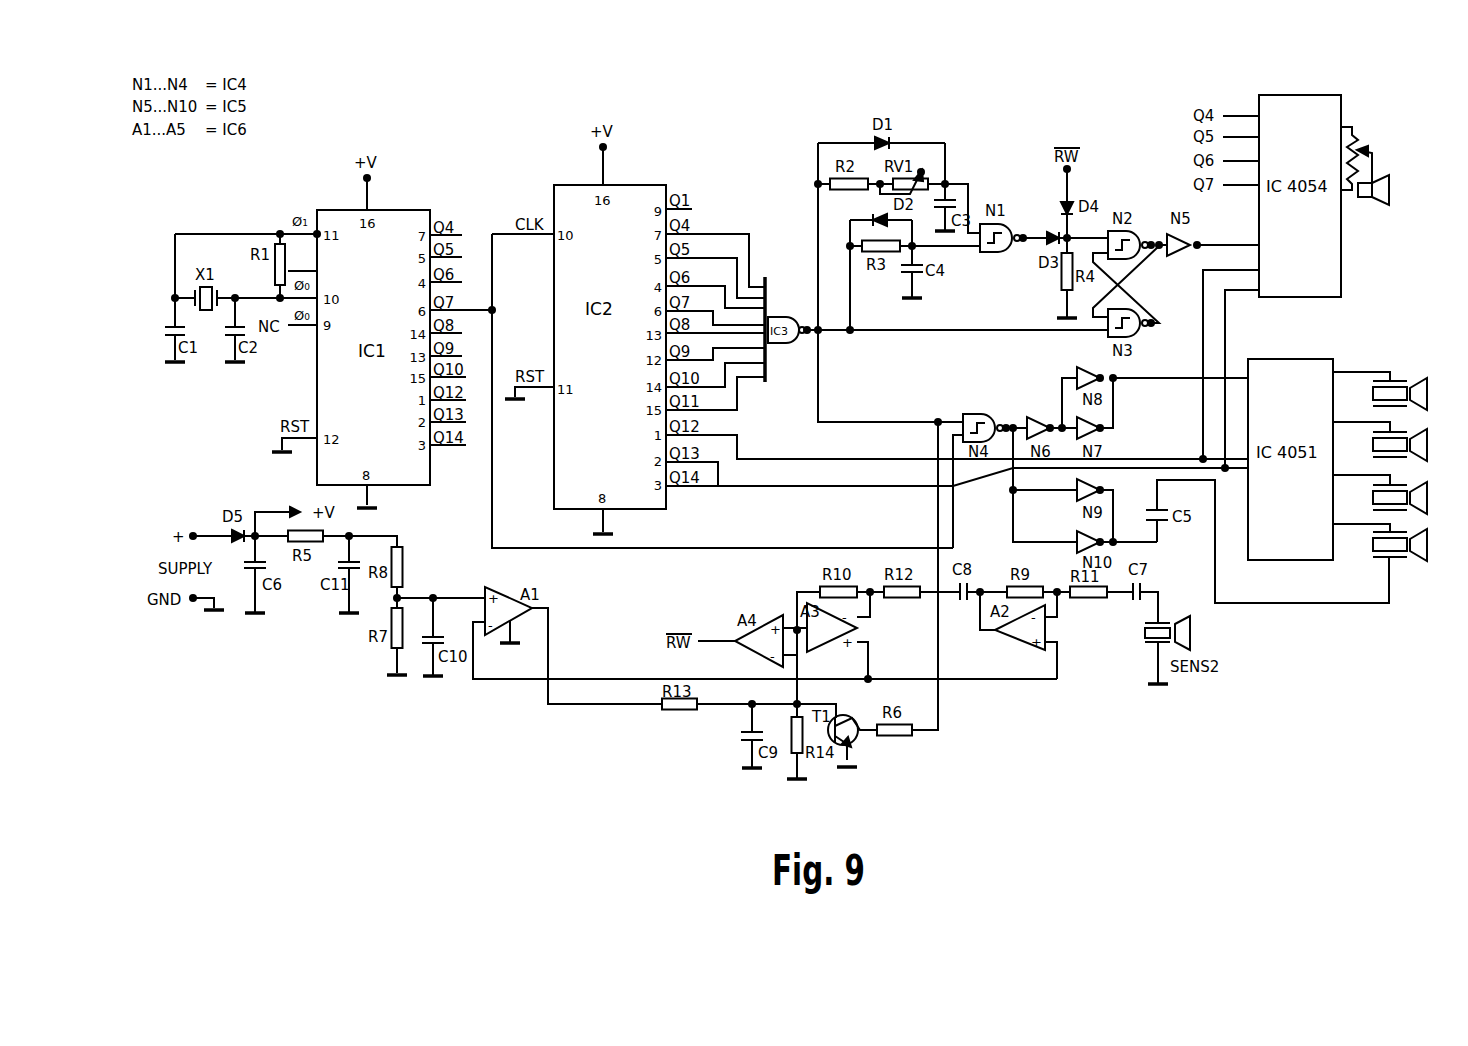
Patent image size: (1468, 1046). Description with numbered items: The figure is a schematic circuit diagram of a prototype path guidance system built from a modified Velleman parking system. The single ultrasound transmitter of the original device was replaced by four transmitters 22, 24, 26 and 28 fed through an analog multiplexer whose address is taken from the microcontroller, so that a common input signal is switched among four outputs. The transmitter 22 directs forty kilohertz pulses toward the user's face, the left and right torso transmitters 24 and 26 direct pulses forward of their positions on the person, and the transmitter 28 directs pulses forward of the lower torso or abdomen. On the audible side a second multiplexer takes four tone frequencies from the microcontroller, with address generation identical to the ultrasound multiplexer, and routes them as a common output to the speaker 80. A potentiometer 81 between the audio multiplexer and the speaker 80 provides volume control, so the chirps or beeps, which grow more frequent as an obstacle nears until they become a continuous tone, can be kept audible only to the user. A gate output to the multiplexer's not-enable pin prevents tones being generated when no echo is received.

The ultrasound transmitter 22 is at (1407, 379).
The left torso transmitter 24 is at (1407, 430).
The right torso transmitter 26 is at (1407, 483).
The ultrasound transmitter 28 is at (1407, 530).
The speaker 80 is at (1390, 188).
The potentiometer 81 is at (1353, 142).